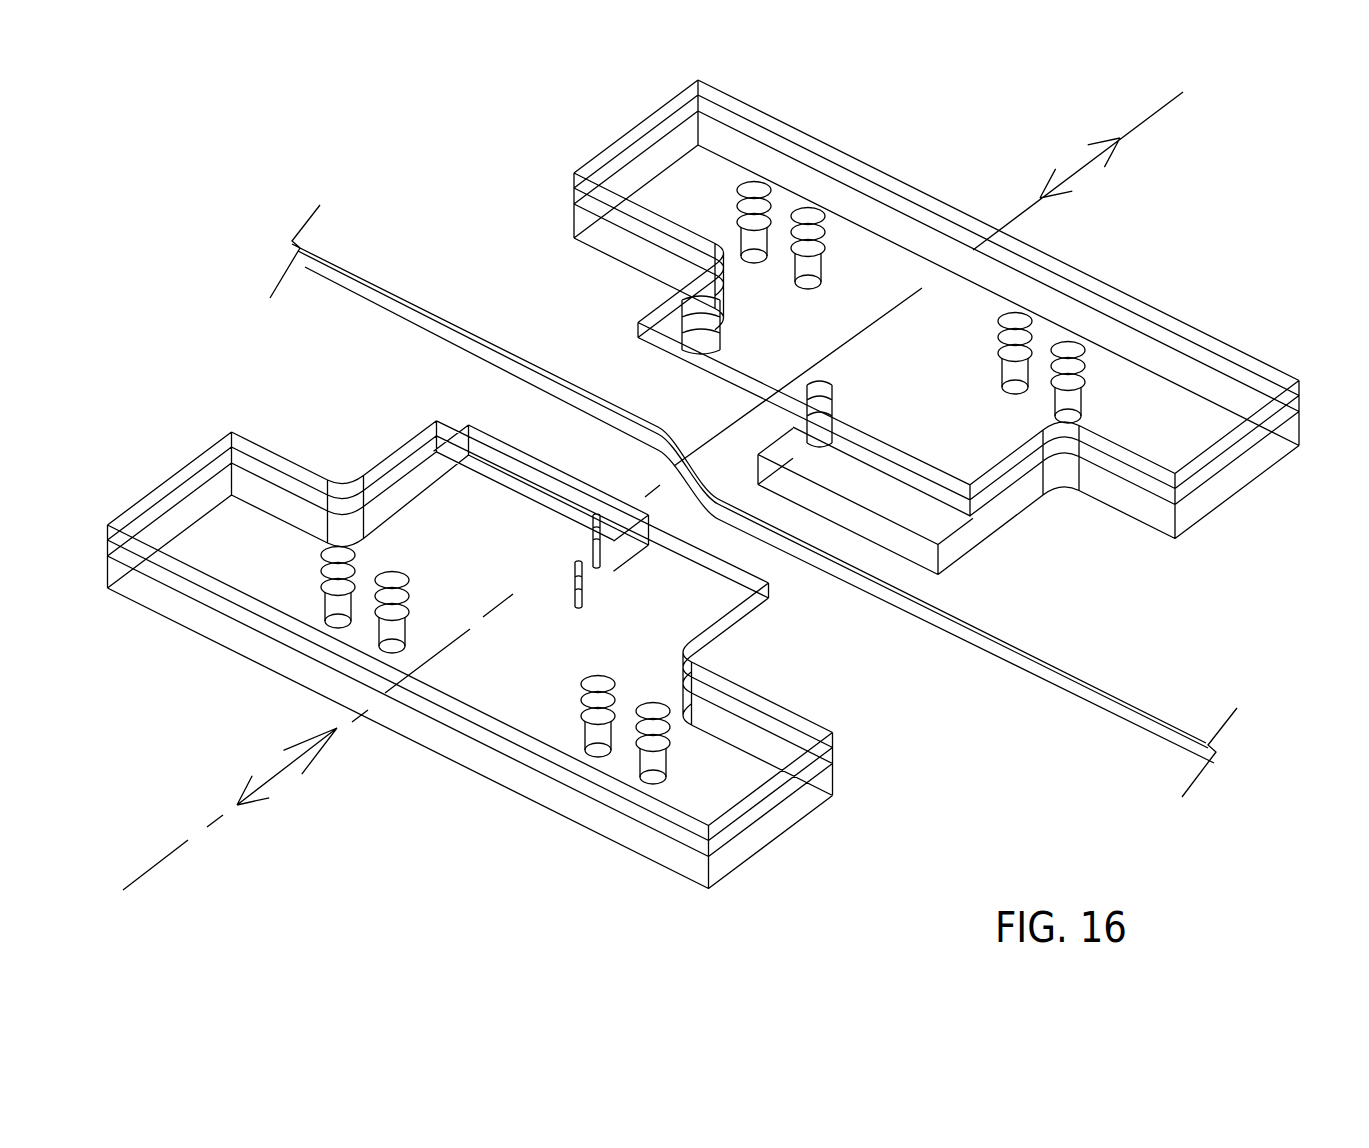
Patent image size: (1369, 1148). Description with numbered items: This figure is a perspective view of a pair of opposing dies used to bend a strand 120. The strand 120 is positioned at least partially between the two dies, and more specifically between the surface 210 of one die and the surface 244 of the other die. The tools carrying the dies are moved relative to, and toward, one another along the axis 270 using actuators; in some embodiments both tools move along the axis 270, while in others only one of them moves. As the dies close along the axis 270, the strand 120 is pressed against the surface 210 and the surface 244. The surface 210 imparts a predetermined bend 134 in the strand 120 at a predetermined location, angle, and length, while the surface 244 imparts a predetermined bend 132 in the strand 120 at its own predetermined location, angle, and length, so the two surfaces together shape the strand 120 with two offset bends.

The axis 270 is at (1019, 205).
The strand 120 is at (1068, 672).
The predetermined bend 132 is at (678, 440).
The predetermined bend 134 is at (712, 490).
The surface 244 is at (622, 512).
The surface 210 is at (772, 421).